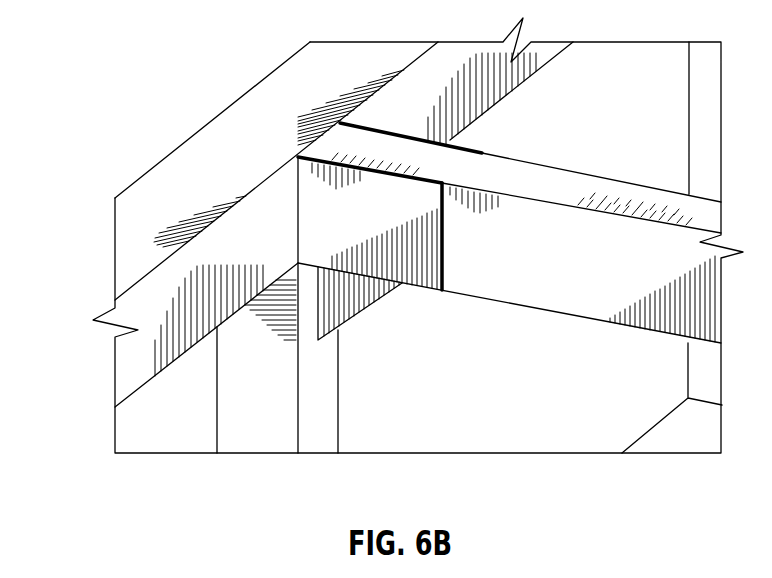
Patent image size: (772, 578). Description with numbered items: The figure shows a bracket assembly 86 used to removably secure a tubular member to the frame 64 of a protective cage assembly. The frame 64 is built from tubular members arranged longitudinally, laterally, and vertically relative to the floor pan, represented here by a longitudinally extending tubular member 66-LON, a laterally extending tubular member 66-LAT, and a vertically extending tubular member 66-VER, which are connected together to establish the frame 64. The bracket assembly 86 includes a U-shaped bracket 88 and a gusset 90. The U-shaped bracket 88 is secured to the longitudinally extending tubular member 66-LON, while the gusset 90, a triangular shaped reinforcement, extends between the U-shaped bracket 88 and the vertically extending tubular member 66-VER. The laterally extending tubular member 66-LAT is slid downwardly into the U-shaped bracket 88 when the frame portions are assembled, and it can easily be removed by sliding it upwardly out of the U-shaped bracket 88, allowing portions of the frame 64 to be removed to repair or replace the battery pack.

The frame 64 is at (171, 149).
The longitudinally extending tubular member 66-LON is at (250, 110).
The laterally extending tubular member 66-LAT is at (527, 287).
The vertically extending tubular member 66-VER is at (255, 414).
The bracket assembly 86 is at (414, 291).
The U-shaped bracket 88 is at (443, 233).
The gusset 90 is at (361, 314).